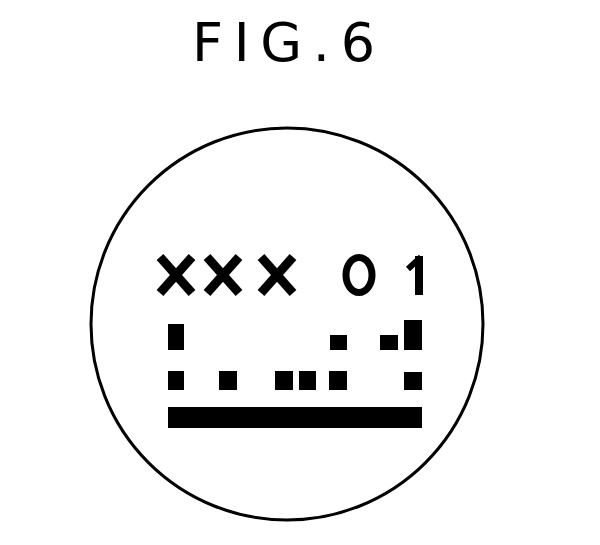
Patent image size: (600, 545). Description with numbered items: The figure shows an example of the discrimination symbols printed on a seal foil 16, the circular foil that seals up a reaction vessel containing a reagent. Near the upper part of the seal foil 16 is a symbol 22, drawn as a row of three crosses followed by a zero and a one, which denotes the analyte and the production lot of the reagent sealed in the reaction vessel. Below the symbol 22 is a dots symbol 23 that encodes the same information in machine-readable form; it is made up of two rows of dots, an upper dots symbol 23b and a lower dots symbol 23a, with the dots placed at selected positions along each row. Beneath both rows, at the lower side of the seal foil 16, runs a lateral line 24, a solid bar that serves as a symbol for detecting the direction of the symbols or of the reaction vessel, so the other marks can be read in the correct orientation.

The seal foil 16 is at (427, 217).
The symbol 22 is at (150, 271).
The dots symbol 23 is at (293, 345).
The dots symbol 23a is at (422, 379).
The dots symbol 23b is at (422, 335).
The lateral line 24 is at (422, 418).